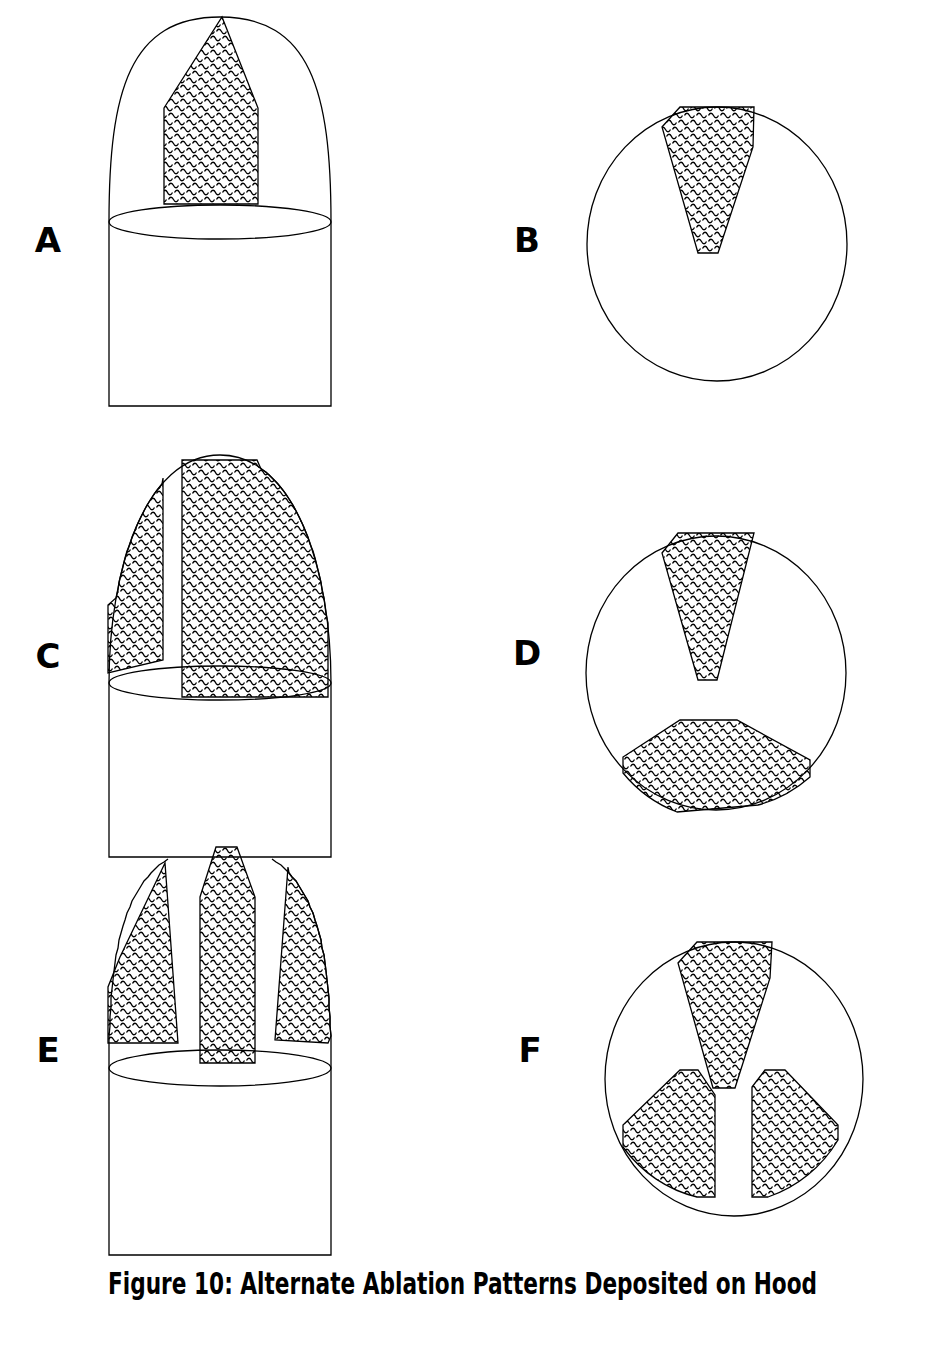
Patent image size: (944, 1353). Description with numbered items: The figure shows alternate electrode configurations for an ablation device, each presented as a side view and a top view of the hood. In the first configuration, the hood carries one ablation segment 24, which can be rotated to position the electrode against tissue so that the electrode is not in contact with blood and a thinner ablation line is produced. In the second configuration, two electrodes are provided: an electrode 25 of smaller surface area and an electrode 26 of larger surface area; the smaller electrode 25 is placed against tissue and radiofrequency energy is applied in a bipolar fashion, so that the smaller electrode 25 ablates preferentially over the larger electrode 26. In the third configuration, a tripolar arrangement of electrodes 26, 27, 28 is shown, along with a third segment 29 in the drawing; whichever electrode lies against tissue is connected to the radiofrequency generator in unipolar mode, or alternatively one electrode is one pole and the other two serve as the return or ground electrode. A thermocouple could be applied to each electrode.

The ablation segment 24 is at (707, 167).
The electrode of smaller surface area 25 is at (237, 583).
The electrode of larger surface area 26 is at (700, 748).
The electrode of tripolar configuration 27 is at (742, 1000).
The electrode of tripolar configuration 28 is at (658, 1110).
The ablation pattern (left tapered strip) 29 is at (772, 1130).